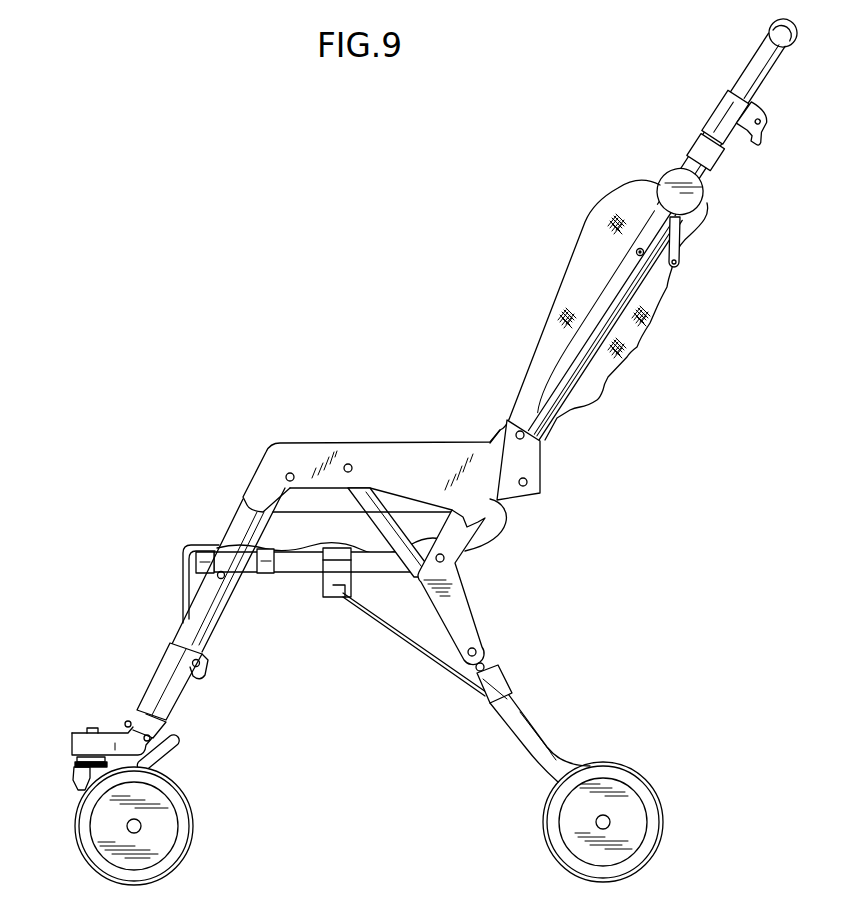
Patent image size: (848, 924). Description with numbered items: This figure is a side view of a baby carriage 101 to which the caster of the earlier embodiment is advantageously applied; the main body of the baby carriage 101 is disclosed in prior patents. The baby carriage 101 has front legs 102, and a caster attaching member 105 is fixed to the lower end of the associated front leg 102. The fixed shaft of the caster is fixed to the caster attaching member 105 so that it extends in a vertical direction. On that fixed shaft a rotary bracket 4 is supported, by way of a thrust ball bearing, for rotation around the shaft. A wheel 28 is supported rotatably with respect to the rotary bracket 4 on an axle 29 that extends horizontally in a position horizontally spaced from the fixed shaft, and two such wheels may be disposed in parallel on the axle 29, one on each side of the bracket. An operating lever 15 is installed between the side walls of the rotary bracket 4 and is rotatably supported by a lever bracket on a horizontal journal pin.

The baby carriage 101 is at (368, 403).
The front leg 102 is at (197, 615).
The caster attaching member 105 is at (110, 737).
The rotary bracket 4 is at (90, 778).
The operating lever 15 is at (178, 740).
The wheel 28 is at (187, 797).
The axle 29 is at (143, 827).